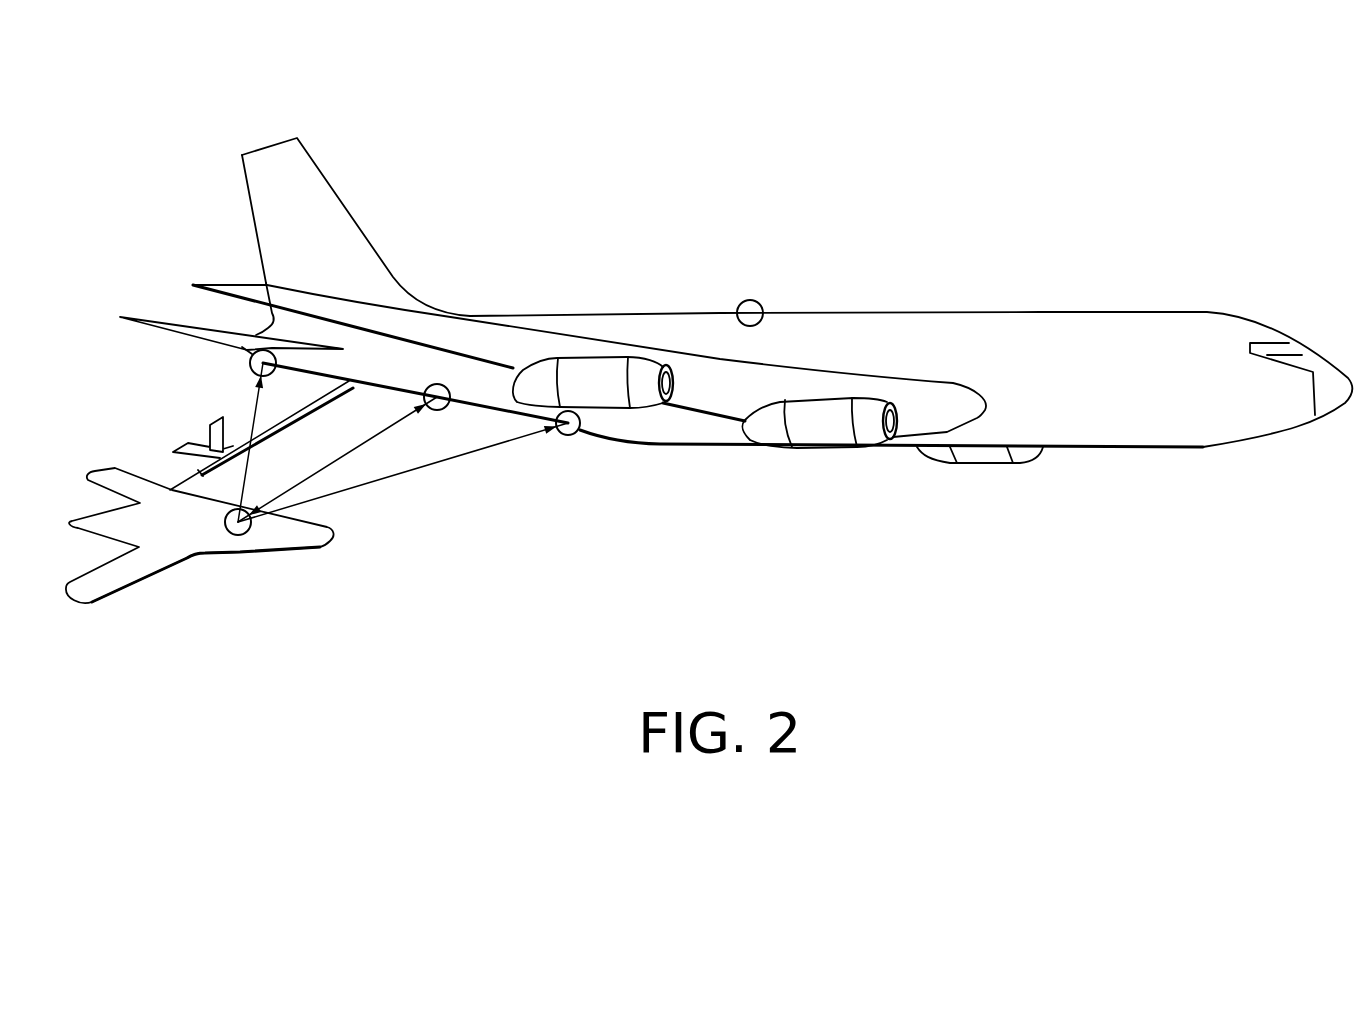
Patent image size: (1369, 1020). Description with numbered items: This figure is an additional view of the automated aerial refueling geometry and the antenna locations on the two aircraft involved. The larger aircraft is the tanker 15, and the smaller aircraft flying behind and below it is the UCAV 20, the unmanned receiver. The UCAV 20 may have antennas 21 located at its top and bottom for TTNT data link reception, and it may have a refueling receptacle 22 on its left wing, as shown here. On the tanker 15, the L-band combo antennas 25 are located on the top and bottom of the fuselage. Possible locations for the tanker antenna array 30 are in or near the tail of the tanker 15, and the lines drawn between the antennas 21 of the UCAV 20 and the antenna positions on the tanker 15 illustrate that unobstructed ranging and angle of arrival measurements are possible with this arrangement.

The tanker 15 is at (1187, 292).
The UCAV 20 is at (90, 603).
The antennas 21 is at (245, 537).
The refueling receptacle 22 is at (170, 487).
The tanker L-band combo antennas 25 is at (762, 300).
The tanker antenna array 30 is at (255, 367).